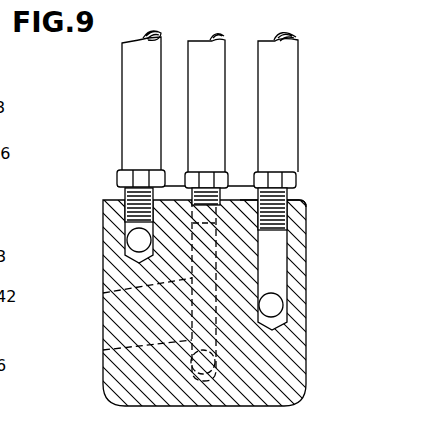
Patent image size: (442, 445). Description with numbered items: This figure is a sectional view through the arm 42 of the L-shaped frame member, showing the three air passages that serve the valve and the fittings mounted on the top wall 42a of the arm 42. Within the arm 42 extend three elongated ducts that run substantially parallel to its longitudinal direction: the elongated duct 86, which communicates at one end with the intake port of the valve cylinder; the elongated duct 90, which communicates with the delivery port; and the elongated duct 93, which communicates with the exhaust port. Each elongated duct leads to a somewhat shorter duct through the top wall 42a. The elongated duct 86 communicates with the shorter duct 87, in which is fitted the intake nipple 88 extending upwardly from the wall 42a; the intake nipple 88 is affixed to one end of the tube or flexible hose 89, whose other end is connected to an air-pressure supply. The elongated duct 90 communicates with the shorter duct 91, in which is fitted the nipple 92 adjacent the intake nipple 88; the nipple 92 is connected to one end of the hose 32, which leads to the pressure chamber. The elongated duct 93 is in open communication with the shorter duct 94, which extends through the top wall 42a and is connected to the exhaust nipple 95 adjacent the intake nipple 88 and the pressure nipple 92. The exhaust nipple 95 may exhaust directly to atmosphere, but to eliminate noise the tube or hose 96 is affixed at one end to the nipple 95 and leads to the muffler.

The hose 32 is at (285, 79).
The arm 42 is at (301, 393).
The top wall 42a is at (302, 200).
The elongated duct 86 is at (139, 240).
The shorter duct 87 is at (157, 222).
The intake nipple 88 is at (118, 177).
The tube or flexible hose 89 is at (138, 78).
The elongated duct 90 is at (271, 296).
The shorter duct 91 is at (287, 252).
The nipple 92 is at (292, 184).
The elongated duct 93 is at (103, 351).
The shorter duct 94 is at (103, 294).
The exhaust nipple 95 is at (222, 182).
The tube or hose 96 is at (215, 83).